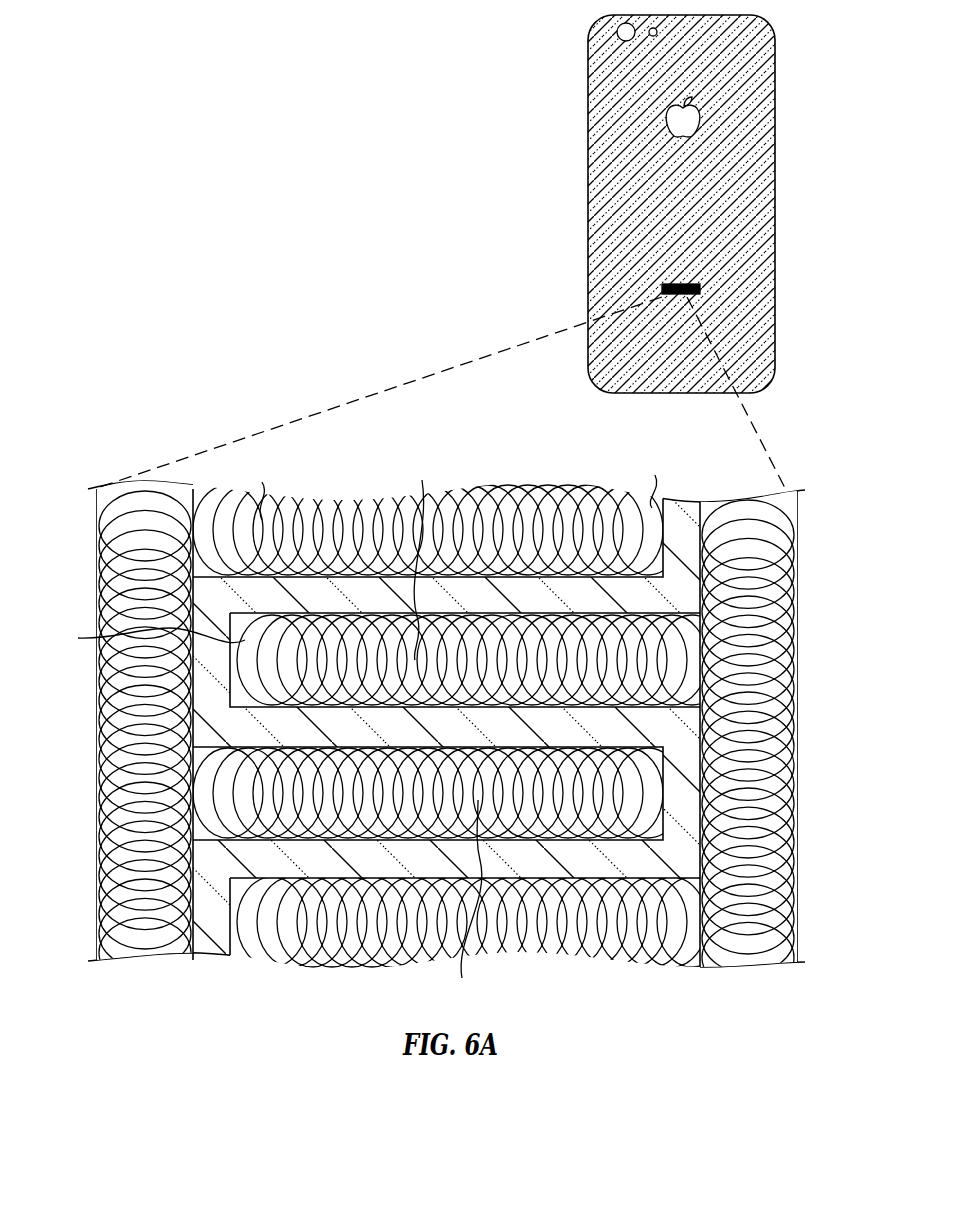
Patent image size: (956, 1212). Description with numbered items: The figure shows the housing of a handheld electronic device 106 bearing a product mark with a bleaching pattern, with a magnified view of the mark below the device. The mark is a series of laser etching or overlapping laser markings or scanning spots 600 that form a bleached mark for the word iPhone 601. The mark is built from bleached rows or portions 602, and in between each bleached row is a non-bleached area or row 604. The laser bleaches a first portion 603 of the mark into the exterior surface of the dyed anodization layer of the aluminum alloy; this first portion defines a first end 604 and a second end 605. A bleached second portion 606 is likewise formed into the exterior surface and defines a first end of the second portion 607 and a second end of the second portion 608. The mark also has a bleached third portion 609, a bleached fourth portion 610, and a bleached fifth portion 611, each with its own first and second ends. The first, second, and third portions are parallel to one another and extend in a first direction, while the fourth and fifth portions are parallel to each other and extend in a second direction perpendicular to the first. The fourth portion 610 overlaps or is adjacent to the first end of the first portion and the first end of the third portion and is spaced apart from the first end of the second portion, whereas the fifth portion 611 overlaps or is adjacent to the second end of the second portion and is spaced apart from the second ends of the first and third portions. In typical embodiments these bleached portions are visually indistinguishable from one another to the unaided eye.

The electronic device 106 is at (775, 205).
The laser etching scanning spots 600 is at (95, 493).
The iPhone mark 601 is at (700, 289).
The bleached rows 602 is at (372, 520).
The first portion 603 is at (263, 490).
The non-bleached row 604 is at (212, 500).
The second end of the first portion 605 is at (656, 480).
The second portion 606 is at (420, 559).
The first end of the second portion 607 is at (144, 638).
The second end of the second portion 608 is at (78, 663).
The third portion 609 is at (464, 900).
The fourth portion 610 is at (105, 841).
The fifth portion 611 is at (753, 575).